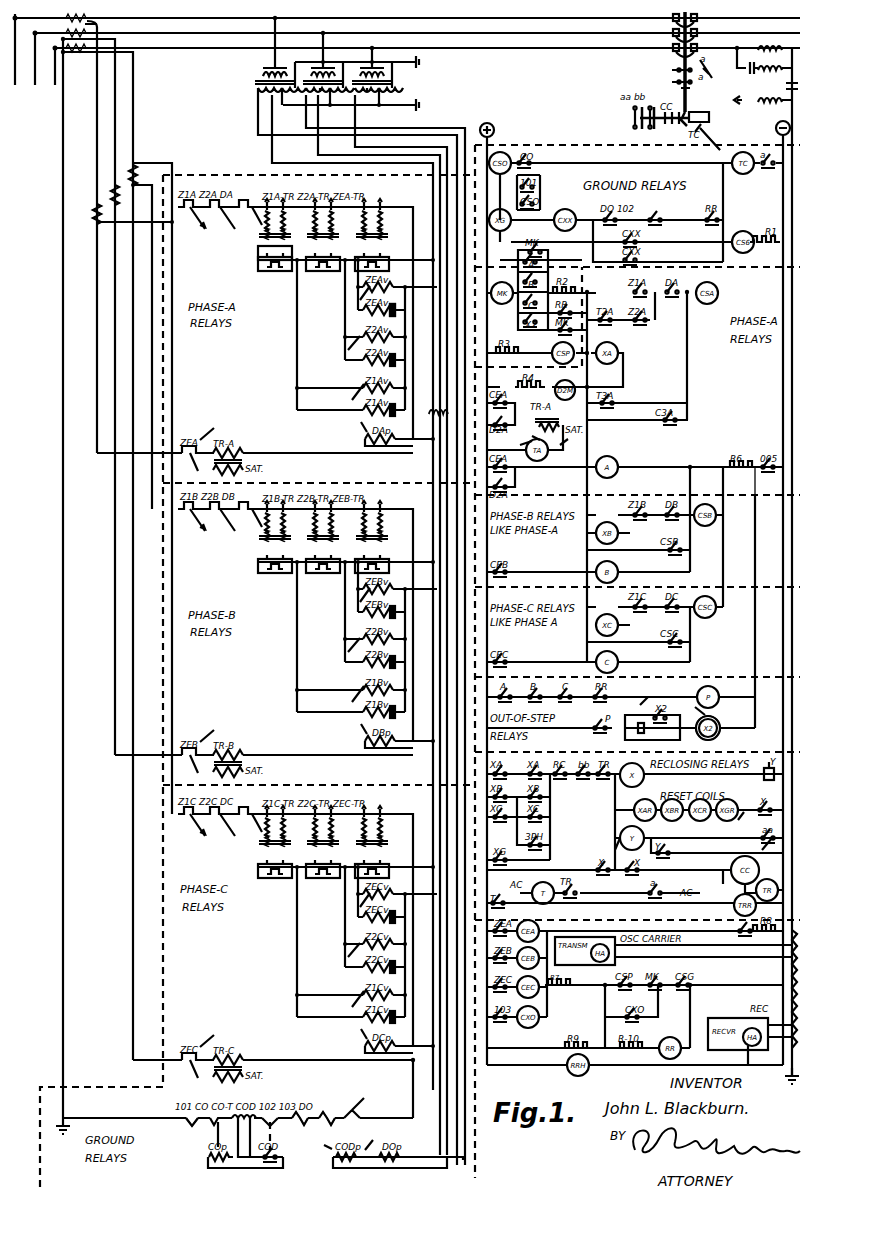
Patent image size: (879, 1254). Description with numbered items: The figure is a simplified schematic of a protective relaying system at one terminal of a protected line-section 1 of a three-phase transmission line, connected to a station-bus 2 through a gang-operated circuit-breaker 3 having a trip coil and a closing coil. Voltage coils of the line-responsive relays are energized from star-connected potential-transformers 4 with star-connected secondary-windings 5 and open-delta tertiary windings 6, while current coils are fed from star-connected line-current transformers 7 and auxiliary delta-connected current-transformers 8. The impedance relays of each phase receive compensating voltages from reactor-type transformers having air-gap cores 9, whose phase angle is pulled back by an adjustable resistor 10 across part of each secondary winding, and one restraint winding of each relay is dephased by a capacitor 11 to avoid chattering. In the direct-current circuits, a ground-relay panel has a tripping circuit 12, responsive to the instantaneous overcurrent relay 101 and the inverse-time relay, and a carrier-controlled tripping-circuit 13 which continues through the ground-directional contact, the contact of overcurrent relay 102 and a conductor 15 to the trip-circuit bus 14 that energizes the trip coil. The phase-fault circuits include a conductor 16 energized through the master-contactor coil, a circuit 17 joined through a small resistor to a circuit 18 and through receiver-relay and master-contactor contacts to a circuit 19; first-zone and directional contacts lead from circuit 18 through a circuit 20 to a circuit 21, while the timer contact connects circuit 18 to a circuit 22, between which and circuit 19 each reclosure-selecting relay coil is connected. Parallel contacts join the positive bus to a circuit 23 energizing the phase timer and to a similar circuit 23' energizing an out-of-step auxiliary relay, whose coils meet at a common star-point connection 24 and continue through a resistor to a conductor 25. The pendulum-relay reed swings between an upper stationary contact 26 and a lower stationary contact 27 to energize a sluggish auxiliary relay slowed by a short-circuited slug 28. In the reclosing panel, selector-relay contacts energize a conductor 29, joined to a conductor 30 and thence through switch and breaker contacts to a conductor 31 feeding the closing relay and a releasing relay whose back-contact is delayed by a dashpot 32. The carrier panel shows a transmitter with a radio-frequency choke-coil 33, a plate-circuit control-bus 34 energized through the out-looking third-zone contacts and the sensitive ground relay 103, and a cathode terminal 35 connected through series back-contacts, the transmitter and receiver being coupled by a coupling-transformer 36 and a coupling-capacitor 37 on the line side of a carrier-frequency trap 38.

The protected line-section 1 is at (760, 33).
The station-bus 2 is at (38, 103).
The circuit-breaker 3 is at (689, 22).
The potential-transformers 4 is at (267, 75).
The secondary-windings 5 is at (265, 92).
The tertiary windings 6 is at (398, 90).
The line-current transformers 7 is at (80, 69).
The auxiliary delta-connected current-transformers 8 is at (105, 239).
The air-gap cores 9 is at (264, 235).
The adjustable resistor 10 is at (270, 262).
The capacitor 11 is at (405, 312).
The ground-fault tripping circuit 12 is at (517, 154).
The carrier-controlled ground-fault tripping-circuit 13 is at (532, 229).
The trip-circuit bus 14 is at (710, 143).
The conductor 15 is at (677, 230).
The conductor 16 is at (518, 261).
The circuit 17 is at (548, 262).
The circuit 18 is at (579, 284).
The circuit 19 is at (592, 305).
The circuit 20 is at (665, 306).
The circuit 21 is at (692, 291).
The circuit 22 is at (630, 325).
The circuit 23 is at (511, 406).
The circuit 23' is at (514, 478).
The common star-point connection 24 is at (690, 465).
The conductor 25 is at (743, 481).
The upper stationary contact 26 is at (630, 708).
The lower stationary contact 27 is at (622, 740).
The short-circuited slug 28 is at (720, 722).
The conductor 29 is at (510, 767).
The conductor 30 is at (552, 776).
The conductor 31 is at (619, 782).
The dashpot 32 is at (760, 783).
The radio-frequency choke-coil 33 is at (578, 965).
The plate-circuit control-bus 34 is at (547, 995).
The cathode-circuit transmitter-terminal 35 is at (605, 990).
The coupling-transformer 36 is at (790, 968).
The coupling-capacitor 37 is at (780, 84).
The carrier-frequency trap 38 is at (746, 58).
The instantaneous overcurrent relay 101 is at (186, 1111).
The instantaneous overcurrent relay 102 is at (301, 1111).
The instantaneous overcurrent relay 103 is at (329, 1111).